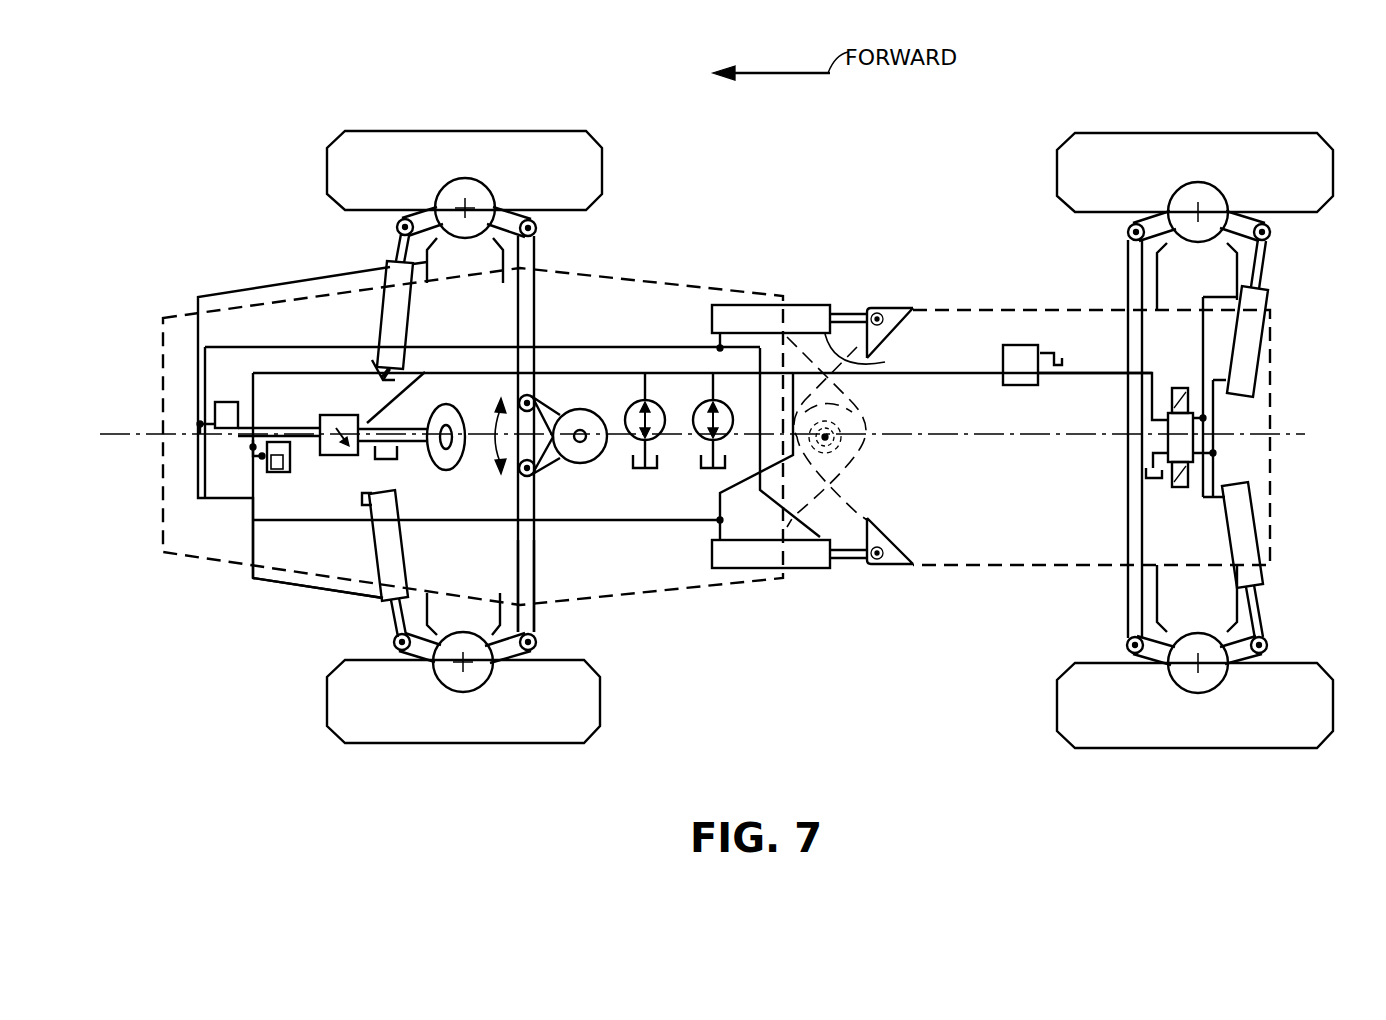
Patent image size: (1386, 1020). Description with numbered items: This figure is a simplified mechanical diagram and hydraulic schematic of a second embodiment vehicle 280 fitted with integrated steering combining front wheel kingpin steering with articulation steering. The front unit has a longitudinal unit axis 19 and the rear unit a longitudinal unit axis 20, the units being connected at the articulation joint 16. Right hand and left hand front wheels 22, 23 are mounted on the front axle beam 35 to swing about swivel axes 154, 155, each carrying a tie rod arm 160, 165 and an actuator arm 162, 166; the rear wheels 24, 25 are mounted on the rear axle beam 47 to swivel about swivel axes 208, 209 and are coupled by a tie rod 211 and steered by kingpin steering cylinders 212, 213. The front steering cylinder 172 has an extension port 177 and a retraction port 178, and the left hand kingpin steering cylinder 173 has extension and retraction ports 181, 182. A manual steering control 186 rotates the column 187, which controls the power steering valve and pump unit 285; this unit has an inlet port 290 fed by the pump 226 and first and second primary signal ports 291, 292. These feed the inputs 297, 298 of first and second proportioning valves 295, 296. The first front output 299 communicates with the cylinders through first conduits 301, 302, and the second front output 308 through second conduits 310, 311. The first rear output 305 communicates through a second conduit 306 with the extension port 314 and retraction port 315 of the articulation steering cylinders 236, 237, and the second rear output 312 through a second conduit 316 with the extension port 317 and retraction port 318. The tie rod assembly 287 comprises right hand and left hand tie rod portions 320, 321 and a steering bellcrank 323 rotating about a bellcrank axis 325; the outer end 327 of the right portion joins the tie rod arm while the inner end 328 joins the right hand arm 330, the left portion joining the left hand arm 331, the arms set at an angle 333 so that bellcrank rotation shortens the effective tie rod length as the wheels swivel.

The articulation joint 16 is at (852, 412).
The longitudinal unit axis 19 is at (130, 430).
The longitudinal unit axis 20 is at (985, 430).
The right hand front wheel 22 is at (452, 130).
The left hand front wheel 23 is at (605, 700).
The right hand rear wheel 24 is at (1160, 133).
The left hand rear wheel 25 is at (1060, 700).
The front axle beam 35 is at (480, 293).
The rear axle beam 47 is at (1183, 292).
The swivel axis 154 is at (478, 200).
The swivel axis 155 is at (458, 680).
The tie rod arm 160 is at (515, 215).
The actuator arm 162 is at (425, 215).
The left hand tie rod arm 165 is at (505, 660).
The left hand actuator arm 166 is at (418, 658).
The steering cylinder 172 is at (405, 300).
The left hand kingpin steering cylinder 173 is at (398, 545).
The extension port 177 is at (400, 345).
The retraction port 178 is at (395, 250).
The extension port 181 is at (385, 500).
The retraction port 182 is at (385, 608).
The steering wheel 186 is at (470, 410).
The column 187 is at (405, 418).
The swivel axis 208 is at (1205, 212).
The swivel axis 209 is at (1205, 665).
The tie rod 211 is at (1128, 590).
The kingpin steering cylinder 212 is at (1248, 342).
The kingpin steering cylinder 213 is at (1240, 530).
The pump 226 is at (665, 400).
The articulation steering cylinder 236 is at (800, 305).
The articulation steering cylinder 237 is at (815, 560).
The second embodiment vehicle 280 is at (683, 212).
The power steering valve and pump unit 285 is at (372, 455).
The tie rod assembly 287 is at (296, 268).
The inlet port 290 is at (385, 400).
The first primary signal port 291 is at (325, 415).
The second primary signal port 292 is at (330, 455).
The first proportioning valve 295 is at (205, 410).
The second proportioning valve 296 is at (262, 457).
The input 297 is at (258, 428).
The input 298 is at (310, 475).
The first front output 299 is at (200, 440).
The first conduit 301 is at (250, 288).
The first conduit 302 is at (235, 505).
The first rear output 305 is at (230, 400).
The second conduit 306 is at (265, 347).
The second front output 308 is at (255, 440).
The second conduit 310 is at (305, 373).
The second conduit 311 is at (270, 588).
The second rear output 312 is at (275, 475).
The extension port 314 is at (735, 305).
The retraction port 315 is at (815, 540).
The second conduit 316 is at (650, 520).
The extension port 317 is at (725, 540).
The retraction port 318 is at (884, 342).
The right hand tie rod portion 320 is at (535, 296).
The left hand tie rod portion 321 is at (535, 560).
The steering bellcrank 323 is at (548, 393).
The bellcrank axis 325 is at (582, 445).
The outer end 327 is at (540, 235).
The inner end 328 is at (520, 395).
The right hand arm 330 is at (552, 412).
The left hand arm 331 is at (540, 473).
The angle 333 is at (525, 436).